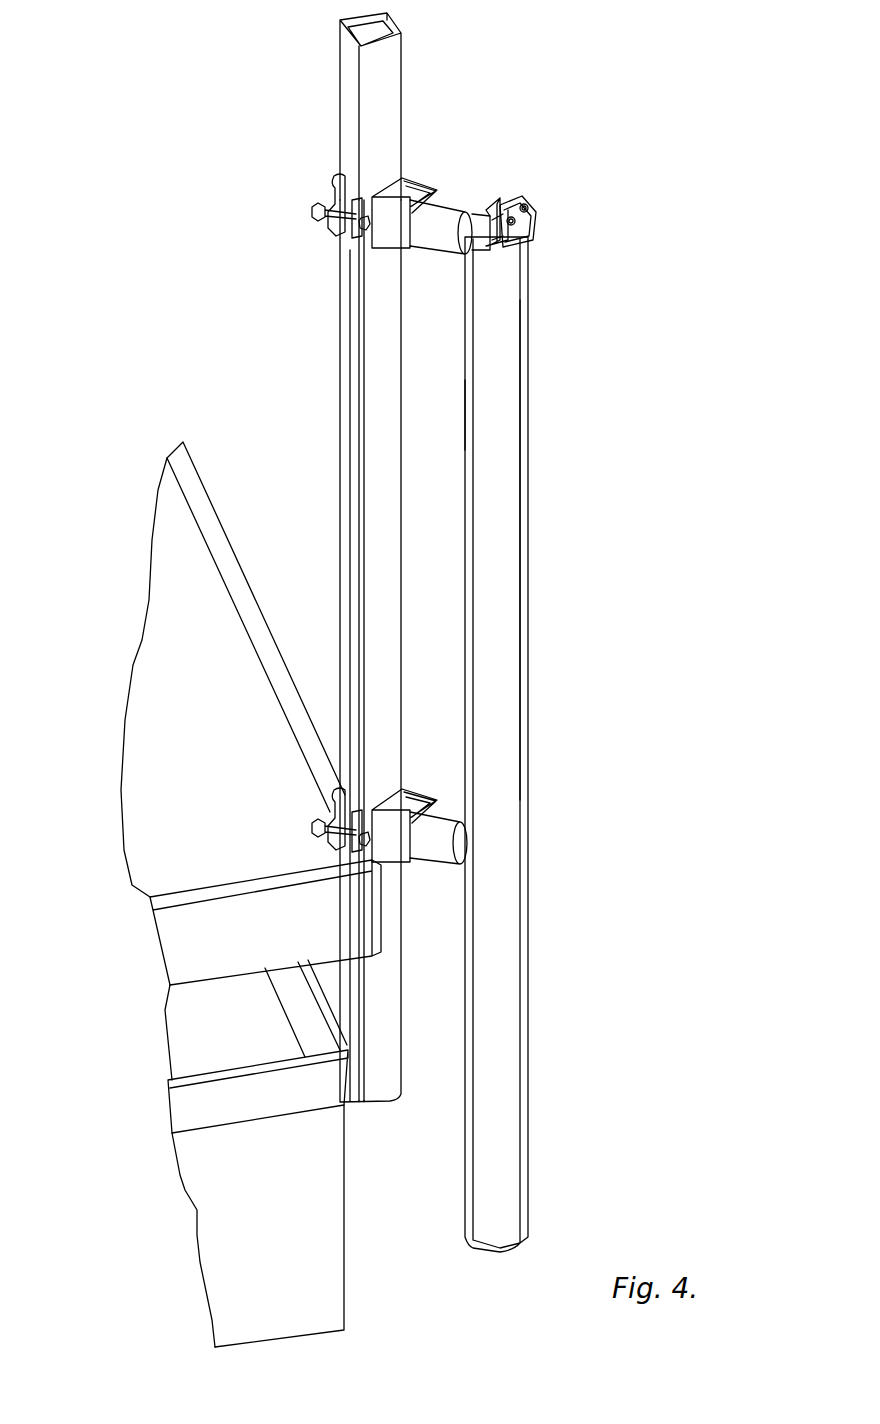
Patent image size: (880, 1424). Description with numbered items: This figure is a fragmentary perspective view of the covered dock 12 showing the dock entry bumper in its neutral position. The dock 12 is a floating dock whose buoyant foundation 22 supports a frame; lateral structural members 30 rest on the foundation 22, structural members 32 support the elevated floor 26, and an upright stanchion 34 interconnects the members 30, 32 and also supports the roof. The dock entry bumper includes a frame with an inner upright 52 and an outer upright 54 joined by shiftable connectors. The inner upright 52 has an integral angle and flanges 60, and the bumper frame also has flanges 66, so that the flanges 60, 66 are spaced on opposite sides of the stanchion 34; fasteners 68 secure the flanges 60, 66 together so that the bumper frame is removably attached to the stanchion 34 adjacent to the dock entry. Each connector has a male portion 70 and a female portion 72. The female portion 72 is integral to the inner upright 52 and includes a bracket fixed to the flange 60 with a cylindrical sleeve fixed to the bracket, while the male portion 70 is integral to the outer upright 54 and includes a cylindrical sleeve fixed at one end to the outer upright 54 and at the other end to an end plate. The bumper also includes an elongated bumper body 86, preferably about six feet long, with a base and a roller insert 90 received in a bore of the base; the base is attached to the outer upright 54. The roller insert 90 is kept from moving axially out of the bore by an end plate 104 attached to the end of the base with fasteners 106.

The covered dock 12 is at (192, 462).
The buoyant foundation 22 is at (330, 1262).
The elevated floor 26 is at (130, 845).
The lateral structural members 30 is at (233, 1113).
The structural members 32 is at (185, 966).
The upright stanchion 34 is at (385, 92).
The inner upright 52 is at (372, 445).
The outer upright 54 is at (472, 408).
The flanges 60 is at (360, 235).
The flanges 66 is at (338, 200).
The fasteners 68 is at (325, 228).
The male portion 70 is at (485, 205).
The female portion 72 is at (440, 245).
The bumper body 86 is at (510, 268).
The roller insert 90 is at (525, 345).
The end plate 104 is at (530, 222).
The fasteners 106 is at (522, 213).